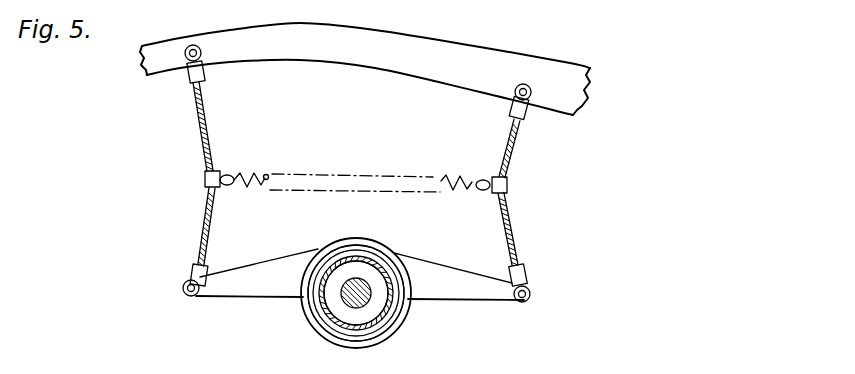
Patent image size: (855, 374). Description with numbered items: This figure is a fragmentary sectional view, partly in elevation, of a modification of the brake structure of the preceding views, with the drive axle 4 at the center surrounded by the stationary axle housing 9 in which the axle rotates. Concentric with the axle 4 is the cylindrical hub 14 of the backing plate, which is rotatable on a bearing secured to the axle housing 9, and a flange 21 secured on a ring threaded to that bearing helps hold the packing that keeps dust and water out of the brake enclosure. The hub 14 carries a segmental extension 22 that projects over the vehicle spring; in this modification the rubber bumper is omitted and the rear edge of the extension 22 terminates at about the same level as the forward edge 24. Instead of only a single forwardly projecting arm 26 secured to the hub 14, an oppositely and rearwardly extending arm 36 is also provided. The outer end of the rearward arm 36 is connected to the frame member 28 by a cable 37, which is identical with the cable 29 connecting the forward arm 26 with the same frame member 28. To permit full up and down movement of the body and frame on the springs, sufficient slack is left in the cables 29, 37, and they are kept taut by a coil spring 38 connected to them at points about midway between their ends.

The frame member 28 is at (428, 76).
The cable 37 is at (213, 132).
The cable 29 is at (516, 150).
The coil spring 38 is at (267, 176).
The rearwardly extending arm 36 is at (252, 293).
The forwardly projecting arm 26 is at (465, 297).
The forward edge 24 is at (398, 268).
The extension 22 is at (365, 241).
The cylindrical hub 14 is at (392, 331).
The axle housing 9 is at (325, 307).
The flange 21 is at (365, 337).
The drive axle 4 is at (357, 307).